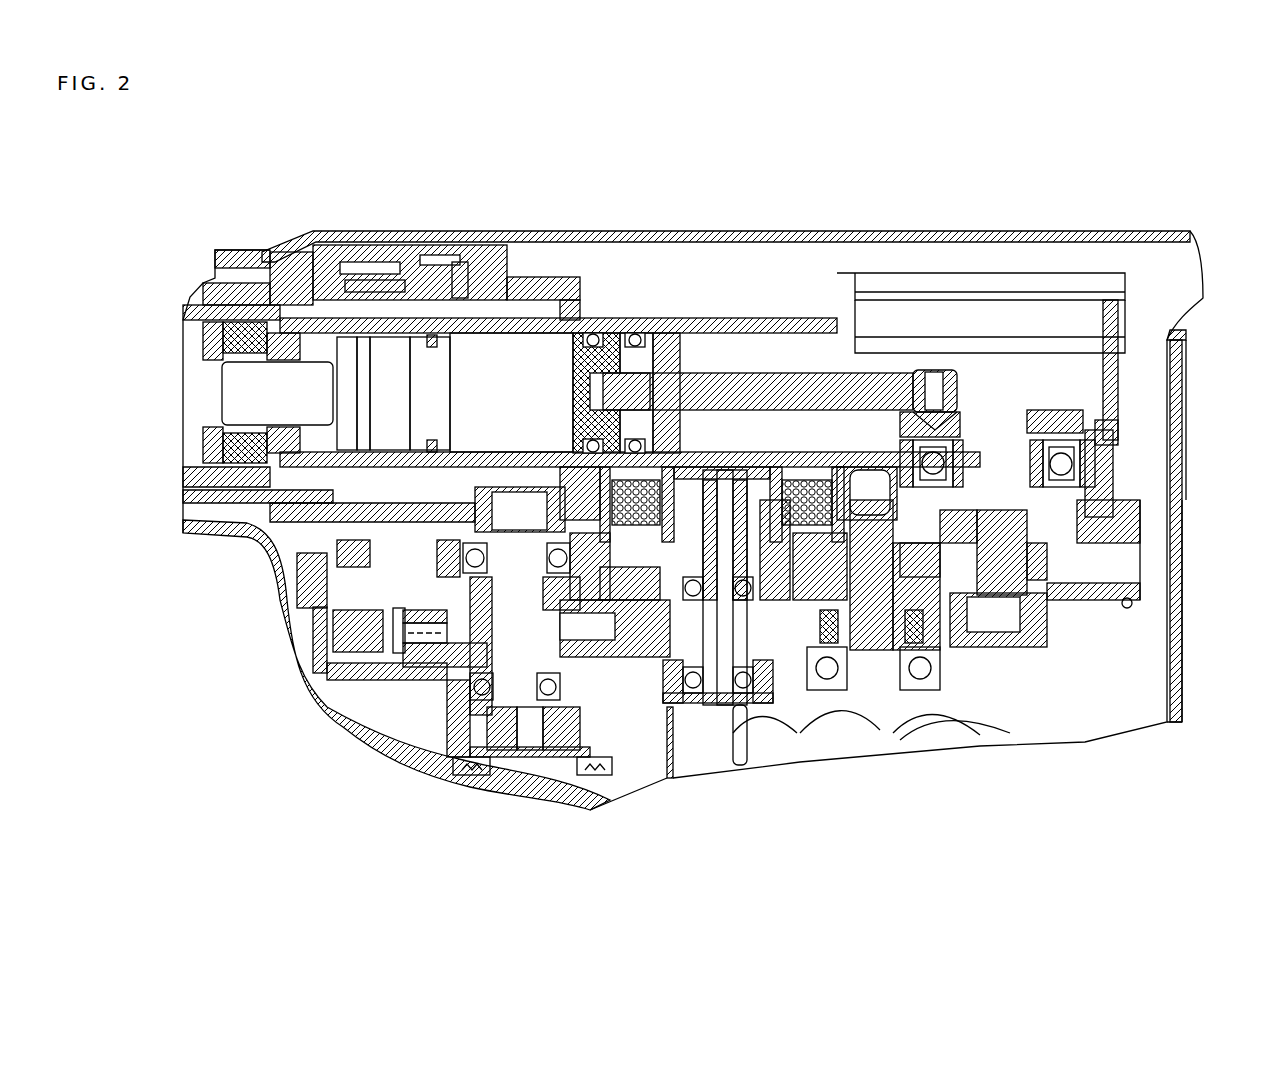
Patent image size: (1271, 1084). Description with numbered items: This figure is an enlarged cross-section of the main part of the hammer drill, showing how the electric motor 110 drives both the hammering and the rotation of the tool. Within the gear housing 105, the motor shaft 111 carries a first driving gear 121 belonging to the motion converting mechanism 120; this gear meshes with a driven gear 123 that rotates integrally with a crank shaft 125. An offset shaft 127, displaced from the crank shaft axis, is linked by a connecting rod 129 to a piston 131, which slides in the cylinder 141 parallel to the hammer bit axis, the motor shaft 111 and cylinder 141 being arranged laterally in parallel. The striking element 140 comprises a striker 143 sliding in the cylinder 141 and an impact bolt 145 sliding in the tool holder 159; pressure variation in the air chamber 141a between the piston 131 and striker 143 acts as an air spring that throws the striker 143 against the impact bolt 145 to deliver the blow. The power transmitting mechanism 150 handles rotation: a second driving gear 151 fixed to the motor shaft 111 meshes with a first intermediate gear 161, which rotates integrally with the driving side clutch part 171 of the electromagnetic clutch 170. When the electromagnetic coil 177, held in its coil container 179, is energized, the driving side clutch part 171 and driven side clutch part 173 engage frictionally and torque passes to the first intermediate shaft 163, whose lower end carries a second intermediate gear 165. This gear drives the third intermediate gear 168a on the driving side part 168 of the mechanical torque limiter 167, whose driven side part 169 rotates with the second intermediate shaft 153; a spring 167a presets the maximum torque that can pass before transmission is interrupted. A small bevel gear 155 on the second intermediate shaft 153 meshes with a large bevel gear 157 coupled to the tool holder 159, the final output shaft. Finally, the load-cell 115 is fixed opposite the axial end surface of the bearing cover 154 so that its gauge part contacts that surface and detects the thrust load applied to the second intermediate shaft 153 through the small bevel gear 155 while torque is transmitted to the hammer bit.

The gear housing 105 is at (553, 275).
The electric motor 110 is at (973, 738).
The motor shaft 111 is at (865, 590).
The load-cell 115 is at (530, 733).
The motion converting mechanism 120 is at (980, 400).
The first driving gear 121 is at (1113, 517).
The driven gear 123 is at (1103, 560).
The crank shaft 125 is at (1013, 567).
The offset shaft 127 is at (933, 375).
The connecting rod 129 is at (827, 465).
The piston 131 is at (657, 413).
The striking element 140 is at (330, 343).
The cylinder 141 is at (710, 320).
The air chamber 141a is at (502, 394).
The striker 143 is at (402, 343).
The impact bolt 145 is at (280, 377).
The power transmitting mechanism 150 is at (647, 662).
The second driving gear 151 is at (933, 603).
The second intermediate shaft 153 is at (512, 690).
The bearing cover 154 is at (557, 710).
The small bevel gear 155 is at (503, 517).
The large bevel gear 157 is at (463, 270).
The tool holder 159 is at (370, 290).
The first intermediate gear 161 is at (822, 608).
The first intermediate shaft 163 is at (717, 653).
The second intermediate gear 165 is at (742, 645).
The mechanical torque limiter 167 is at (440, 653).
The spring 167a is at (413, 612).
The driving side part 168 is at (655, 680).
The third intermediate gear 168a is at (337, 647).
The driven side part 169 is at (410, 652).
The electromagnetic clutch 170 is at (853, 510).
The driving side clutch part 171 is at (887, 680).
The driven side clutch part 173 is at (905, 352).
The electromagnetic coil 177 is at (645, 497).
The coil container 179 is at (790, 470).